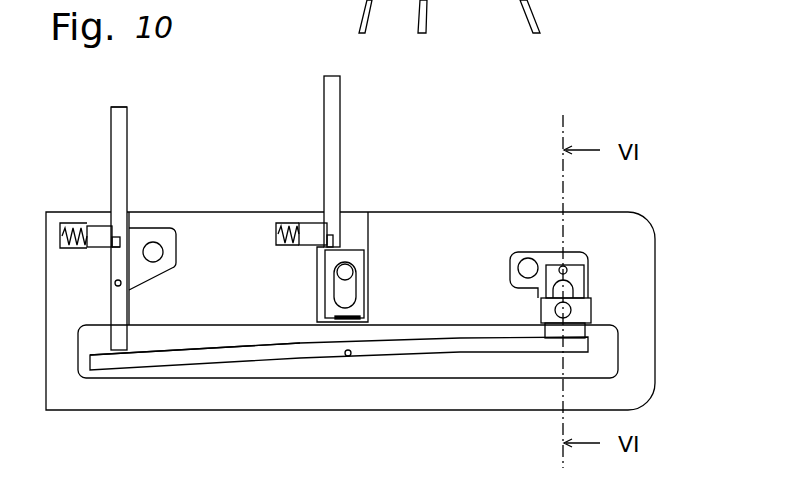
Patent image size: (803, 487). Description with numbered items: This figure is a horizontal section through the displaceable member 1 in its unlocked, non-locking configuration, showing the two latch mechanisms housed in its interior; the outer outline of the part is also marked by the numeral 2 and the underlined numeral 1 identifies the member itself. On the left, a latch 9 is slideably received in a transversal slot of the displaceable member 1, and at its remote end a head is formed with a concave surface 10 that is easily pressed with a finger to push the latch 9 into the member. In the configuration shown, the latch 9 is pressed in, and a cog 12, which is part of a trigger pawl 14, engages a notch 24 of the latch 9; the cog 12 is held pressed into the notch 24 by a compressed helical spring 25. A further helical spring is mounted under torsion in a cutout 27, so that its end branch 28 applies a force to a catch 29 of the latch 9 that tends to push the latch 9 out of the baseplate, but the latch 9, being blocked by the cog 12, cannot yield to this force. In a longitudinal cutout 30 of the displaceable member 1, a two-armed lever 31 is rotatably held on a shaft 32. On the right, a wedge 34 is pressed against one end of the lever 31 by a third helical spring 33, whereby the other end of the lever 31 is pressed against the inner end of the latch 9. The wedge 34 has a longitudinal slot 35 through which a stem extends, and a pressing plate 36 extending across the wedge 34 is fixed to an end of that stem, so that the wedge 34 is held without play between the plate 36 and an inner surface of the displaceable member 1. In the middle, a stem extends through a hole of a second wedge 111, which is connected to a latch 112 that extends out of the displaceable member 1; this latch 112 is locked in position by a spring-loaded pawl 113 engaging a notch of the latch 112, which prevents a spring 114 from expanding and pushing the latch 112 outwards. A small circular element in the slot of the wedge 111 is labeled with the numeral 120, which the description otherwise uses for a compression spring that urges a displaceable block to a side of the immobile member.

The displaceable member 1 is at (484, 285).
The housing 2 is at (46, 358).
The latch 9 is at (137, 163).
The concave surface 10 is at (122, 108).
The cog 12 is at (110, 243).
The trigger pawl 14 is at (99, 228).
The notch 24 is at (119, 235).
The helical spring 25 is at (62, 228).
The cutout 27 is at (176, 259).
The end branch 28 is at (160, 242).
The catch 29 is at (116, 285).
The longitudinal cutout 30 is at (252, 332).
The two-armed lever 31 is at (246, 356).
The shaft 32 is at (348, 357).
The third helical spring 33 is at (540, 270).
The wedge 34 is at (580, 270).
The longitudinal slot 35 is at (570, 293).
The pressing plate 36 is at (585, 312).
The wedge 111 is at (362, 306).
The latch 112 is at (335, 157).
The spring-loaded pawl 113 is at (311, 220).
The spring 114 is at (352, 320).
The compression spring 120 is at (350, 270).